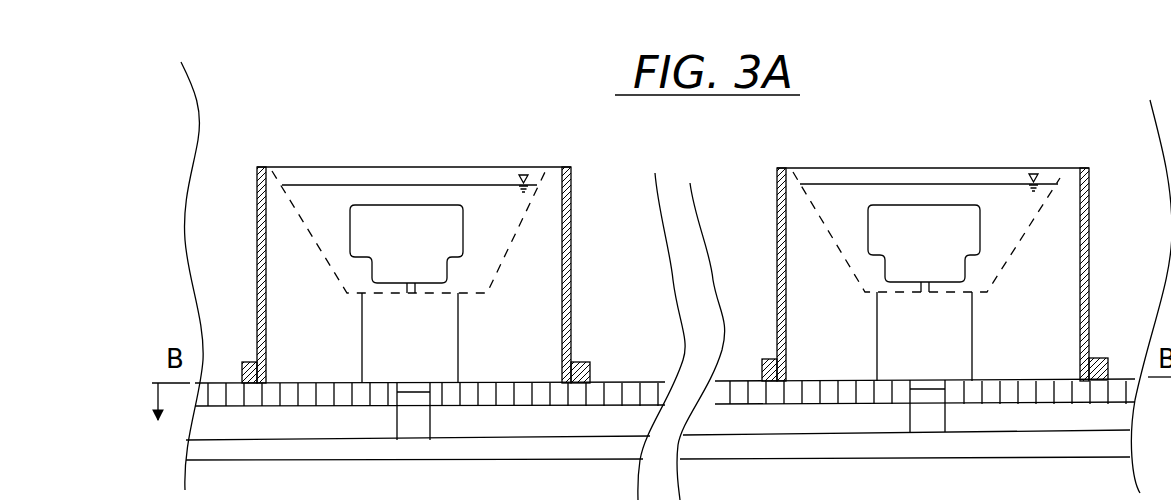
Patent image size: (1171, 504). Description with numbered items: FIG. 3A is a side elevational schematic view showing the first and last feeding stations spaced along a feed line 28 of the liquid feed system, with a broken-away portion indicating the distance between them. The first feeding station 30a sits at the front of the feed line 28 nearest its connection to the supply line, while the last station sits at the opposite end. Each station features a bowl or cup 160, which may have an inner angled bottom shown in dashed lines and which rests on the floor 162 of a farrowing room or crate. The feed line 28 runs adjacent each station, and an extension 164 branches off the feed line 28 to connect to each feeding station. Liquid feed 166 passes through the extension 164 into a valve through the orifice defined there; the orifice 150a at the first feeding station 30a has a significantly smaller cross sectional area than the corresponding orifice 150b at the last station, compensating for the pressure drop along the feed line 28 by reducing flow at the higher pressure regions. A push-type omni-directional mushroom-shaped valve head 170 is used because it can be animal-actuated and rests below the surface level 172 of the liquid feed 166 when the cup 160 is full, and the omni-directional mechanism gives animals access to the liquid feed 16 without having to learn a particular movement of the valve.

The first feeding station 30a is at (417, 150).
The bowl or cup 160 is at (564, 178).
The liquid feed 16 is at (935, 246).
The surface level 172 is at (335, 185).
The mushroom-shaped valve head 170 is at (433, 219).
The liquid feed 166 is at (498, 218).
The floor 162 is at (615, 383).
The orifice 150a is at (413, 383).
The orifice 150b is at (945, 337).
The extension 164 is at (419, 423).
The feed line 28 is at (477, 452).